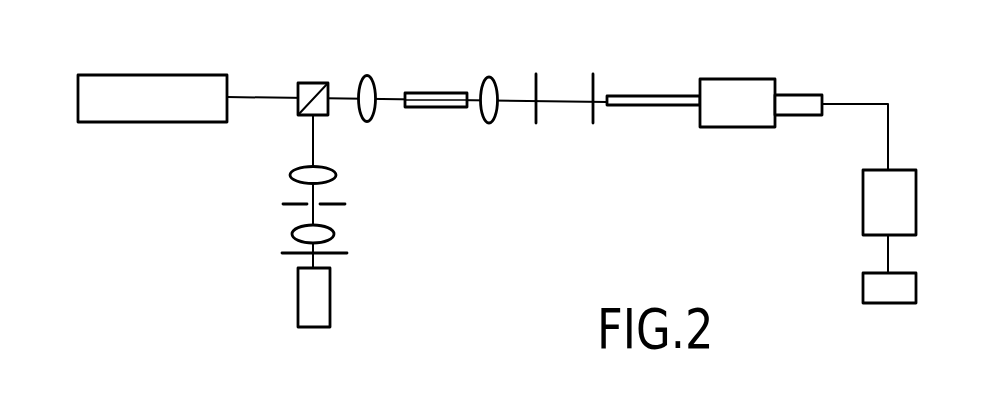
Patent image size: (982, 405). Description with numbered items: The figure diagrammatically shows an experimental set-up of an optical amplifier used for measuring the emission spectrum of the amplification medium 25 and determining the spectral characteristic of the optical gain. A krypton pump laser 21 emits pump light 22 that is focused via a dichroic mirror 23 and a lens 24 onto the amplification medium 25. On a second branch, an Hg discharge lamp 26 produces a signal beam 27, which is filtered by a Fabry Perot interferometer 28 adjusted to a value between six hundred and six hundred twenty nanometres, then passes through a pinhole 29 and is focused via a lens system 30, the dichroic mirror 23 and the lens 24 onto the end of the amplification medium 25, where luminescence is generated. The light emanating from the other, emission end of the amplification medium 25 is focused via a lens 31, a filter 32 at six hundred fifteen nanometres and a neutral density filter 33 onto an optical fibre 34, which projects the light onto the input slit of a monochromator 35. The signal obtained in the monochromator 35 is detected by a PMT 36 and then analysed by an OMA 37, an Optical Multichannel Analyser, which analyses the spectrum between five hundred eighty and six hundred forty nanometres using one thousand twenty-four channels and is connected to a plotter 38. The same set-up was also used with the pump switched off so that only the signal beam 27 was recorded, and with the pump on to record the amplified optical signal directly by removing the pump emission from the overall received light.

The krypton pump laser 21 is at (140, 75).
The pump light 22 is at (258, 97).
The dichroic mirror 23 is at (313, 83).
The lens 24 is at (362, 76).
The amplification medium 25 is at (430, 93).
The Hg discharge lamp 26 is at (330, 299).
The signal beam 27 is at (320, 258).
The Fabry Perot interferometer 28 is at (347, 253).
The pinhole 29 is at (345, 204).
The lens system 30 is at (336, 175).
The lens 31 is at (487, 77).
The 615 nm filter 32 is at (538, 84).
The neutral density filter 33 is at (593, 87).
The optical fibre 34 is at (650, 96).
The monochromator 35 is at (733, 79).
The PMT 36 is at (801, 95).
The OMA 37 is at (863, 199).
The plotter 38 is at (863, 285).